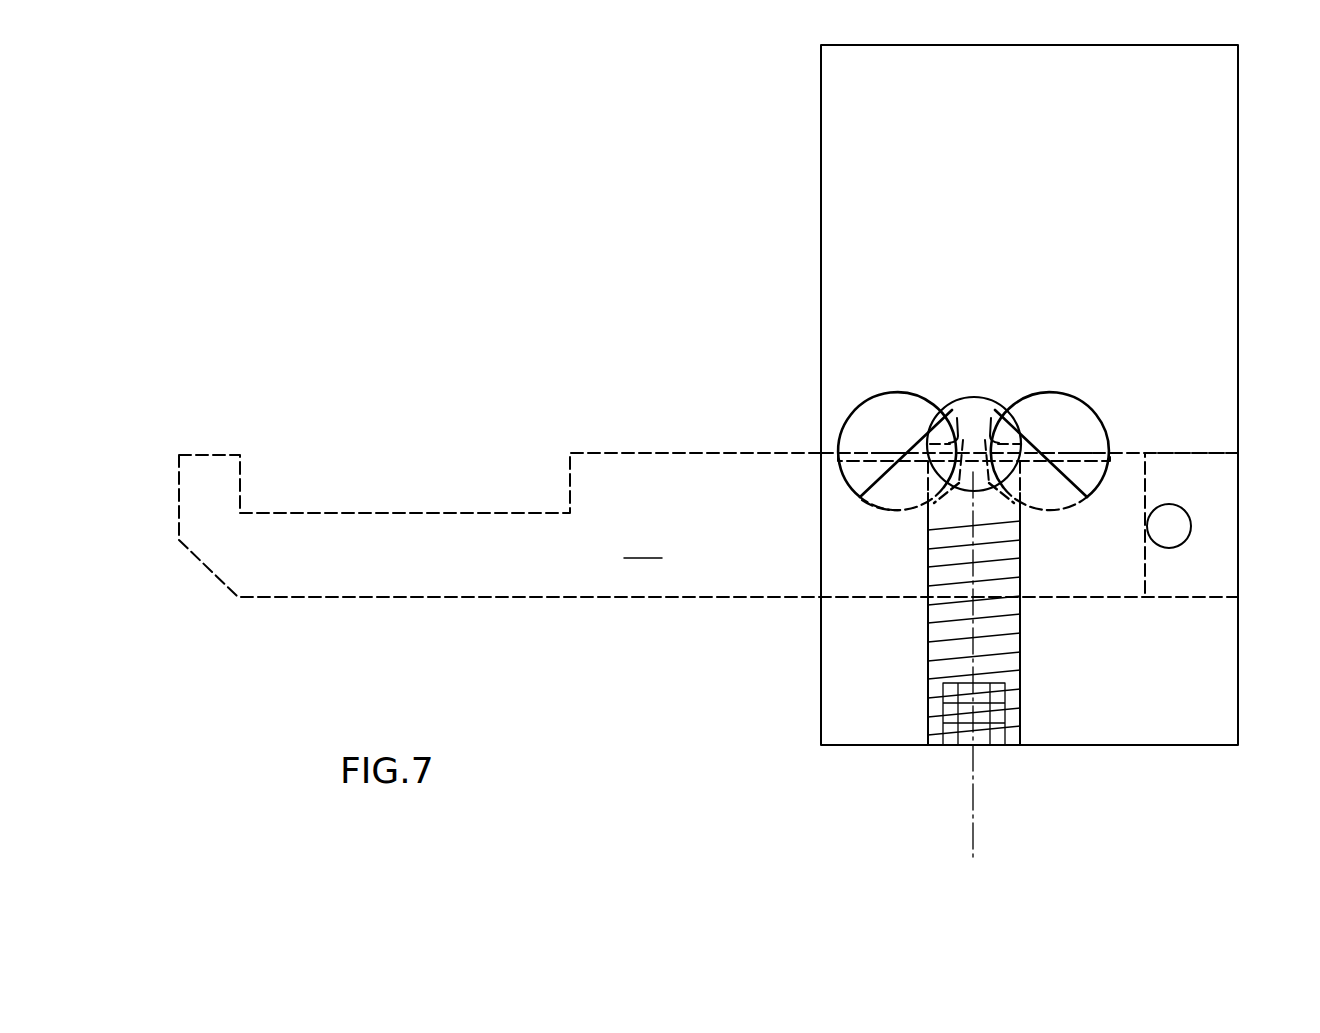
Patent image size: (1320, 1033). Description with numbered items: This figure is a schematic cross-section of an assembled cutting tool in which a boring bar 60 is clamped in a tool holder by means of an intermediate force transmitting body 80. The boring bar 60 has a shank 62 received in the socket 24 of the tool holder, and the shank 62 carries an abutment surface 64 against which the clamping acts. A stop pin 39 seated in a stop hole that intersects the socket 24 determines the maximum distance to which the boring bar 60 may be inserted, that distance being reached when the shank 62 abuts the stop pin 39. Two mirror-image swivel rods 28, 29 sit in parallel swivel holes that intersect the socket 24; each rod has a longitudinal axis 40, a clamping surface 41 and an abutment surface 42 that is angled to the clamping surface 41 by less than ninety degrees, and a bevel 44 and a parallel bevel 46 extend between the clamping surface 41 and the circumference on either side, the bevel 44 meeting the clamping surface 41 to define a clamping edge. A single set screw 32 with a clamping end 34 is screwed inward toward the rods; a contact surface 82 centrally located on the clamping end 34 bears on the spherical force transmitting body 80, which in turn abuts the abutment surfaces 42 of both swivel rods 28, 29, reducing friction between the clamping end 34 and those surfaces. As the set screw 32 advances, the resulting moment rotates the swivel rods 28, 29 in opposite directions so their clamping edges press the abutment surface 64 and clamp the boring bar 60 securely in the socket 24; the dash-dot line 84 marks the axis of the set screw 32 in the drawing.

The socket 24 is at (1195, 597).
The swivel rod 28 is at (926, 378).
The swivel rod 29 is at (1049, 378).
The set screw 32 is at (995, 632).
The clamping end 34 is at (958, 498).
The stop pin 39 is at (1177, 526).
The longitudinal axis 40 is at (905, 458).
The clamping surface 41 is at (872, 458).
The abutment surface 42 is at (912, 446).
The bevel 44 is at (850, 462).
The bevel 46 is at (995, 425).
The boring bar 60 is at (708, 525).
The shank 62 is at (718, 453).
The abutment surface 64 is at (890, 500).
The force transmitting body 80 is at (945, 411).
The contact surface 82 is at (990, 487).
The center axis 84 is at (978, 795).